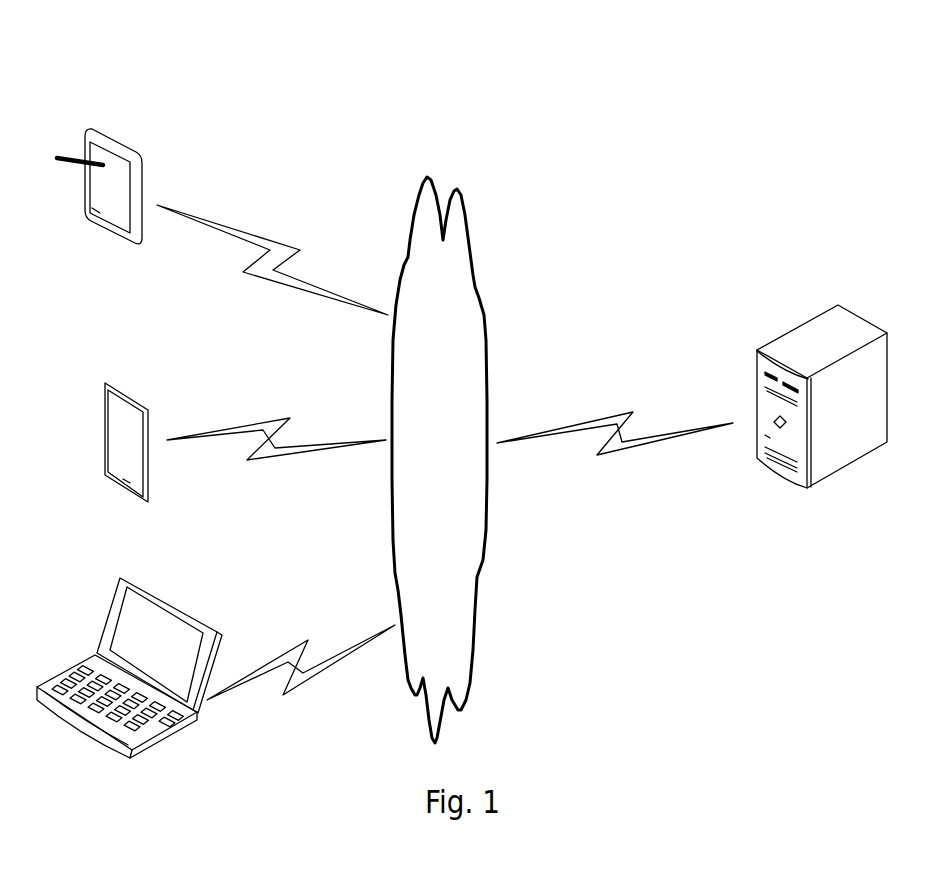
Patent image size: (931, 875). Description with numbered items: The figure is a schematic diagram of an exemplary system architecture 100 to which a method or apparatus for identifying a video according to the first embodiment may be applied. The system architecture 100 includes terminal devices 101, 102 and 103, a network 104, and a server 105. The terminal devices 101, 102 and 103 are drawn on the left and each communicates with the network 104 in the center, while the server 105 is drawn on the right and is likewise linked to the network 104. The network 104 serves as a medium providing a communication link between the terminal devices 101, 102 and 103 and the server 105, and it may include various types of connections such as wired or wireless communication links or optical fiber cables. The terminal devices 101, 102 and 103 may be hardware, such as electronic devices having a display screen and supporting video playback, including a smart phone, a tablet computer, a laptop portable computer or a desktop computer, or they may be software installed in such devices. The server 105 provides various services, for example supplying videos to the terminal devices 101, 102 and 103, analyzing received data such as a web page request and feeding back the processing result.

The system architecture 100 is at (810, 113).
The terminal device 101 is at (143, 172).
The terminal device 102 is at (152, 420).
The terminal device 103 is at (163, 600).
The network 104 is at (487, 348).
The server 105 is at (768, 470).